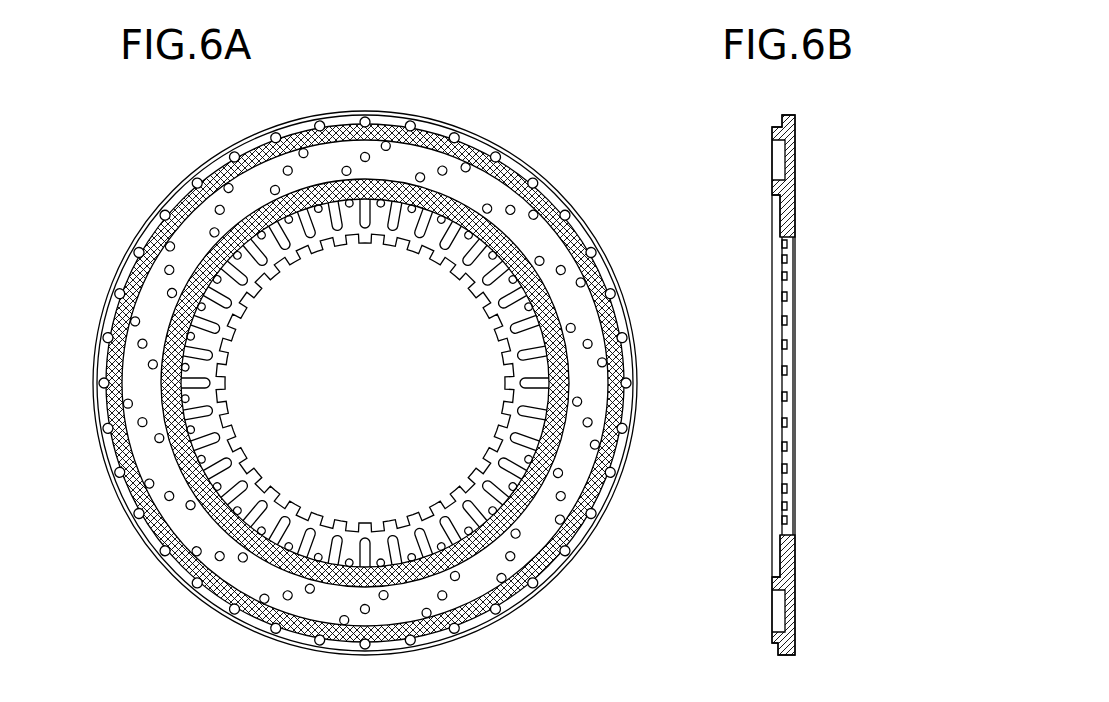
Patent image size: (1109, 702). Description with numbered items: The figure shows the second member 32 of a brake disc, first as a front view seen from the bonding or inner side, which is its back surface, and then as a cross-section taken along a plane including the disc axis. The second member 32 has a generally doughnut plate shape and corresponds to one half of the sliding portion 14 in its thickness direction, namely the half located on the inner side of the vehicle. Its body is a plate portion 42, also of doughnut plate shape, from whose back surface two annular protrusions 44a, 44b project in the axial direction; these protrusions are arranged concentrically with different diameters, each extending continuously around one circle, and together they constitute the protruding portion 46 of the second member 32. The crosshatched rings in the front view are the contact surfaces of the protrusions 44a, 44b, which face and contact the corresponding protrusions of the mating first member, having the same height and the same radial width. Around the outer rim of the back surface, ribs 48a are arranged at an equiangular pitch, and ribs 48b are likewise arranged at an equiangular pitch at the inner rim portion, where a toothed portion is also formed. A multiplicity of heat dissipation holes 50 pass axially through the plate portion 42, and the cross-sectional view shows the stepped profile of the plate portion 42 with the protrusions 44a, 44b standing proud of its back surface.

In FIG. 6A, the sliding portion 14 is at (142, 590).
In FIG. 6A, the second member 32 is at (203, 125).
In FIG. 6B, the second member 32 is at (826, 131).
In FIG. 6A, the plate portion 42 is at (467, 188).
In FIG. 6B, the plate portion 42 is at (795, 598).
In FIG. 6A, the annular protrusion 44a is at (525, 197).
In FIG. 6B, the annular protrusion 44a is at (772, 640).
In FIG. 6A, the annular protrusion 44b is at (515, 250).
In FIG. 6B, the annular protrusion 44b is at (772, 584).
In FIG. 6A, the protruding portion 46 is at (665, 130).
In FIG. 6B, the protruding portion 46 is at (678, 575).
In FIG. 6A, the ribs 48a is at (110, 478).
In FIG. 6A, the ribs 48b is at (221, 462).
In FIG. 6A, the heat dissipation holes 50 is at (147, 417).